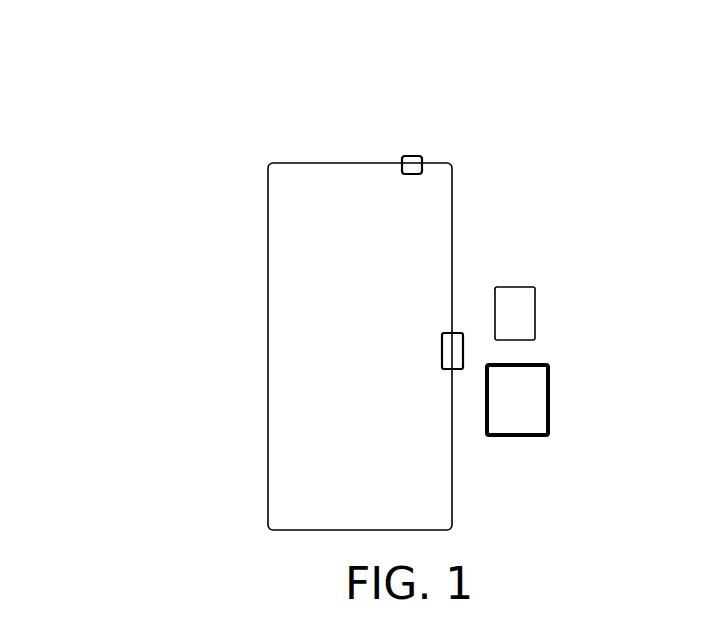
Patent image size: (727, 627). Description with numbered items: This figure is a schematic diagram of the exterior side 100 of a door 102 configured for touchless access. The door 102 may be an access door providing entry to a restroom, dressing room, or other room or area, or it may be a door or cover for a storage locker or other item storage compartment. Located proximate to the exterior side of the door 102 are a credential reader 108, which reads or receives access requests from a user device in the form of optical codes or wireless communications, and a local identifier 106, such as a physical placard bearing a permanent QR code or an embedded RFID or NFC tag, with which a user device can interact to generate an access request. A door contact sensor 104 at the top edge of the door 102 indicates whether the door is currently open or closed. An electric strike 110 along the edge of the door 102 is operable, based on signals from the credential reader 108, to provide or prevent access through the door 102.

The exterior side 100 is at (98, 72).
The door 102 is at (300, 165).
The door contact sensor 104 is at (412, 156).
The local identifier 106 is at (548, 400).
The credential reader 108 is at (521, 287).
The electric strike 110 is at (442, 360).